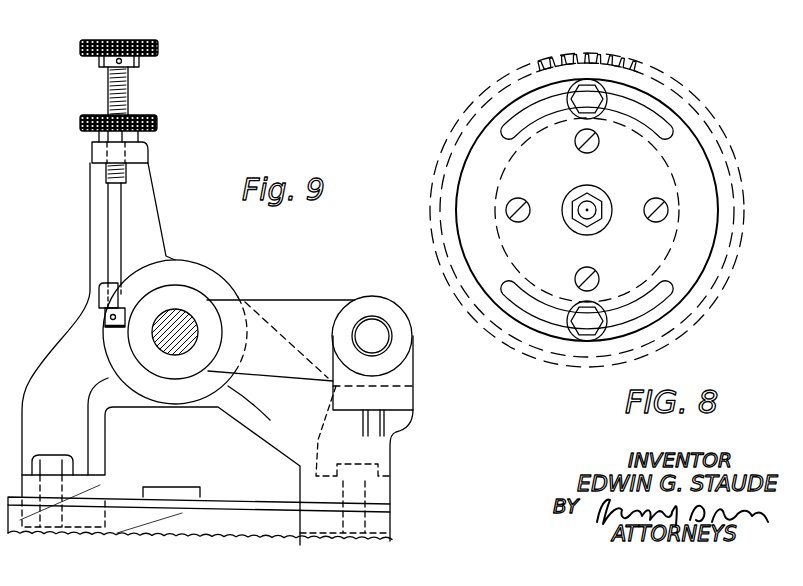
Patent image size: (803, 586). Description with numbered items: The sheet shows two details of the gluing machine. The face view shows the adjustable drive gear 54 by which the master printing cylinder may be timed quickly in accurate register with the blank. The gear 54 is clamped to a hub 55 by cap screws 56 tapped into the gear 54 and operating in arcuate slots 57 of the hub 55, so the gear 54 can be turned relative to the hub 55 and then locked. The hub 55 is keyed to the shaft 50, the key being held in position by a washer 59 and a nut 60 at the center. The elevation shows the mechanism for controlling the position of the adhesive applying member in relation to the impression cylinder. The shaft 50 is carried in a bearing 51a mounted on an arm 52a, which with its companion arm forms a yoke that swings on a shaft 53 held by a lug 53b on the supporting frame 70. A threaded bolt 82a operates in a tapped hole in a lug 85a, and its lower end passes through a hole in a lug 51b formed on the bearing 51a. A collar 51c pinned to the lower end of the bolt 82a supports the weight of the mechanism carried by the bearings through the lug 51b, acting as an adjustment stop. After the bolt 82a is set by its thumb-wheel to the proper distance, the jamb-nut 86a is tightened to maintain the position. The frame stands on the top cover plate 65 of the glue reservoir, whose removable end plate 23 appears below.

In FIG. 9, the threaded bolt 82a is at (130, 92).
In FIG. 9, the jamb-nut 86a is at (158, 125).
In FIG. 9, the lug 85a is at (137, 155).
In FIG. 9, the bracket body 70 is at (146, 207).
In FIG. 9, the shaft 50 is at (196, 324).
In FIG. 9, the bearing 51a is at (163, 308).
In FIG. 9, the lug 51b is at (99, 291).
In FIG. 9, the collar 51c is at (105, 319).
In FIG. 9, the arm 52a is at (275, 310).
In FIG. 9, the shaft 53 is at (380, 332).
In FIG. 9, the lug 53b is at (392, 362).
In FIG. 9, the top cover plate 65 is at (120, 505).
In FIG. 9, the end plate 23 is at (232, 524).
In FIG. 8, the adjustable gear 54 is at (571, 54).
In FIG. 8, the hub 55 is at (693, 165).
In FIG. 8, the cap screws 56 is at (594, 96).
In FIG. 8, the slots 57 is at (660, 126).
In FIG. 8, the washer 59 is at (567, 219).
In FIG. 8, the nut 60 is at (598, 214).